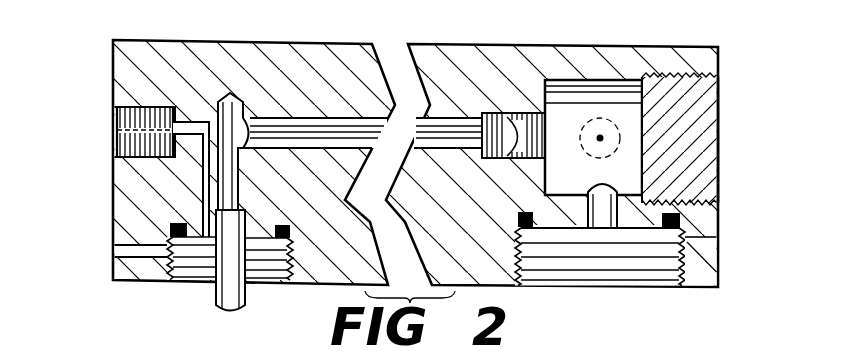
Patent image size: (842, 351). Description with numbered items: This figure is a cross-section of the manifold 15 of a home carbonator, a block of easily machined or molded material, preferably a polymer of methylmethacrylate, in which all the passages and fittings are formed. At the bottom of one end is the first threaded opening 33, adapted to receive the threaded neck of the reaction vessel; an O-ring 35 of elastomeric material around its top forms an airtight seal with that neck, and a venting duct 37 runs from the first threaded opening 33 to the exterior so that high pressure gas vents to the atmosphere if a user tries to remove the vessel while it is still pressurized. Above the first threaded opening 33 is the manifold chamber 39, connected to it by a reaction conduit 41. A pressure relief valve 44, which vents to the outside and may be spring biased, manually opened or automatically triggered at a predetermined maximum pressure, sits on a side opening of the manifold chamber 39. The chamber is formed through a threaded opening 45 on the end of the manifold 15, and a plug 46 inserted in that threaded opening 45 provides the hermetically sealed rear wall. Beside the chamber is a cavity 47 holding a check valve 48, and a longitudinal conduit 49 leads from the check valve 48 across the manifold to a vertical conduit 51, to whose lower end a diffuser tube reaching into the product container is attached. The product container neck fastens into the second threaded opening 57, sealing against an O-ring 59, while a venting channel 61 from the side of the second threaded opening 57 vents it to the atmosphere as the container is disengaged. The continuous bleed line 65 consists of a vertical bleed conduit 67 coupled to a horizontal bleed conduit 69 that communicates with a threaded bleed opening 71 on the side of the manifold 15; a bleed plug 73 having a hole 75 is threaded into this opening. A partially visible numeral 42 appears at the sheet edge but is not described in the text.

The manifold 15 is at (342, 42).
The first threaded opening 33 is at (672, 275).
The O-ring 35 is at (682, 216).
The venting duct 37 is at (713, 228).
The manifold chamber 39 is at (600, 80).
The reaction conduit 41 is at (603, 222).
The component 42 is at (664, 346).
The pressure relief valve 44 is at (600, 140).
The threaded opening 45 is at (718, 173).
The plug 46 is at (710, 112).
The cavity 47 is at (550, 124).
The check valve 48 is at (502, 118).
The longitudinal conduit 49 is at (440, 136).
The vertical conduit 51 is at (250, 112).
The second threaded opening 57 is at (183, 277).
The O-ring 59 is at (197, 280).
The venting channel 61 is at (113, 250).
The continuous bleed line 65 is at (113, 123).
The vertical bleed conduit 67 is at (200, 120).
The horizontal bleed conduit 69 is at (187, 120).
The threaded bleed opening 71 is at (113, 118).
The bleed plug 73 is at (122, 148).
The hole 75 is at (117, 130).